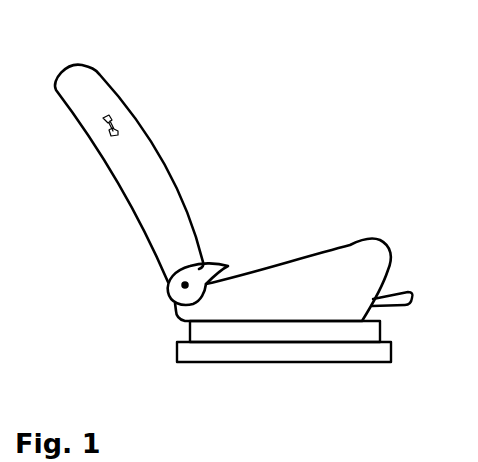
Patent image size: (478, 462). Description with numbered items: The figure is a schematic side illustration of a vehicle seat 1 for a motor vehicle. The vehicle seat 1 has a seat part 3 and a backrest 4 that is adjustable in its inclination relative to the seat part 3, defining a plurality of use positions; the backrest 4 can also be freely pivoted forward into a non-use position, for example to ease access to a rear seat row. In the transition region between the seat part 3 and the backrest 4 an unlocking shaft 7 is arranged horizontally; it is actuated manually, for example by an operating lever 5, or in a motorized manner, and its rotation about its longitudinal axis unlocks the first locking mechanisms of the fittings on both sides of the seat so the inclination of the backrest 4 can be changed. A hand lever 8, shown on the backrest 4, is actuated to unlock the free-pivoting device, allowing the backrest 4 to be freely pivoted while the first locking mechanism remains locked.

The vehicle seat 1 is at (283, 121).
The seat part 3 is at (360, 261).
The backrest 4 is at (150, 157).
The operating lever 5 is at (203, 273).
The unlocking shaft 7 is at (184, 285).
The hand lever 8 is at (118, 128).